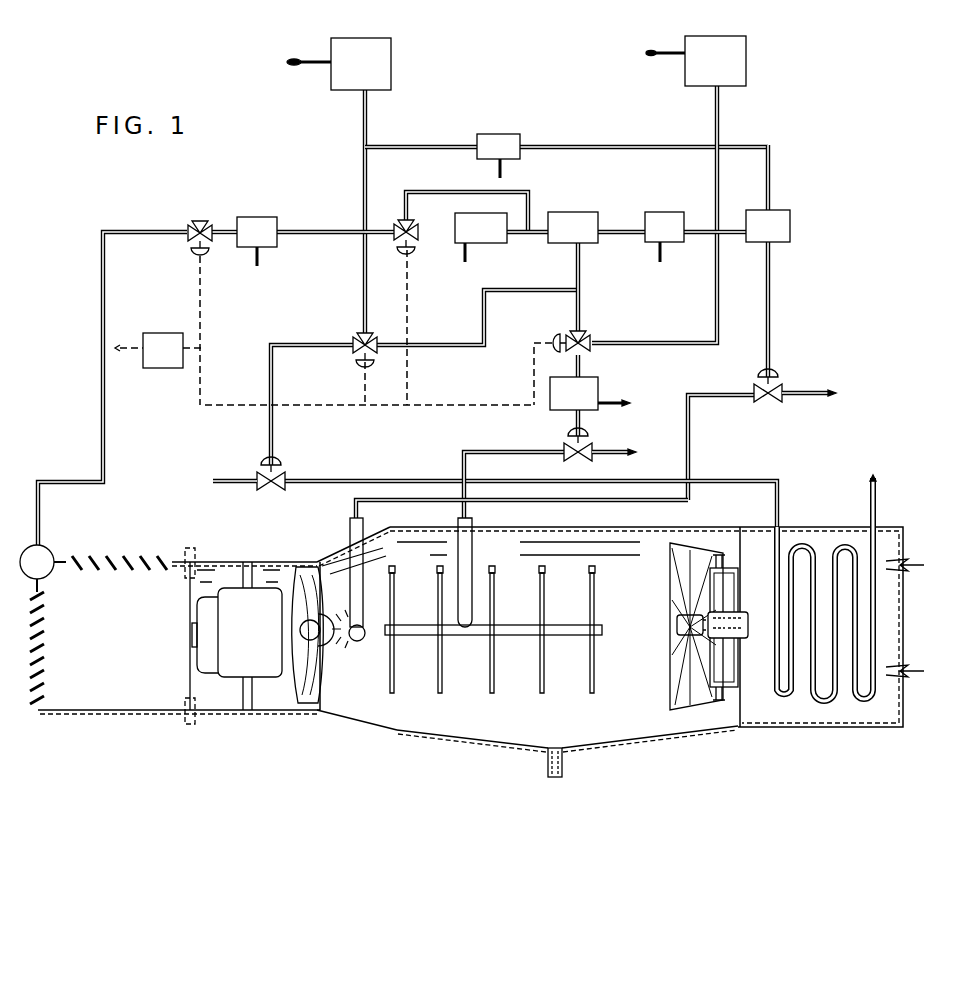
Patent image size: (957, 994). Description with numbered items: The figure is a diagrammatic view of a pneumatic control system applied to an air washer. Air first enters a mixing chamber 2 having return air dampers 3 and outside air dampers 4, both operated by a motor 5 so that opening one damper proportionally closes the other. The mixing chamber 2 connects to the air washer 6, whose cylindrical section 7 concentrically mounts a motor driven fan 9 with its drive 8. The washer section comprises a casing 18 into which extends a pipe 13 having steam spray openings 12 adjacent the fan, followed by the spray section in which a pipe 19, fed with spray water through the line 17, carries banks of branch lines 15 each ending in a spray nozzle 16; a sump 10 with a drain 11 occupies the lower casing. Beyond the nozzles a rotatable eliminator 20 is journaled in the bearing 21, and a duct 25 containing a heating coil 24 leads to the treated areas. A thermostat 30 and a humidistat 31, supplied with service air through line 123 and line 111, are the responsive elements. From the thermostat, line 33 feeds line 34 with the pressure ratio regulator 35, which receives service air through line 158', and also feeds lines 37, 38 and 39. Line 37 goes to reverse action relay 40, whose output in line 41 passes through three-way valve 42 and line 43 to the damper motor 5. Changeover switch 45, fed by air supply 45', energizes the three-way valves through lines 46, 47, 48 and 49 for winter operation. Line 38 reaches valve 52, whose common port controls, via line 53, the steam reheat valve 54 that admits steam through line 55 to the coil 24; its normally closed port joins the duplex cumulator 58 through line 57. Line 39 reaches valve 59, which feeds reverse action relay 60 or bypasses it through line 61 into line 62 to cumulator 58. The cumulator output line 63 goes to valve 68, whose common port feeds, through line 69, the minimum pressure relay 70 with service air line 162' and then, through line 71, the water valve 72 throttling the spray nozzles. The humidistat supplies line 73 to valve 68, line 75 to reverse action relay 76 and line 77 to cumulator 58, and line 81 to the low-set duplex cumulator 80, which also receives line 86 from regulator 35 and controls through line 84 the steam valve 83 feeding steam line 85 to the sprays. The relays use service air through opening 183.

The mixing chamber 2 is at (122, 651).
The return air dampers 3 is at (125, 556).
The outside air dampers 4 is at (32, 650).
The motor 5 is at (47, 552).
The air washer 6 is at (356, 726).
The cylindrical section 7 is at (236, 714).
The fan motor 8 is at (255, 641).
The motor driven fan 9 is at (319, 581).
The sump 10 is at (514, 750).
The drain 11 is at (563, 770).
The spray openings 12 is at (359, 642).
The pipe 13 is at (349, 538).
The branch lines 15 is at (395, 606).
The spray nozzle 16 is at (396, 573).
The line 17 is at (473, 557).
The casing 18 is at (398, 740).
The pipe 19 is at (418, 626).
The rotatable eliminator 20 is at (728, 607).
The bearing 21 is at (675, 566).
The heating coil 24 is at (786, 700).
The duct 25 is at (821, 526).
The thermostat 30 is at (392, 62).
The humidistat 31 is at (747, 56).
The line 33 is at (367, 140).
The line 34 is at (430, 146).
The pressure ratio regulator 35 is at (493, 133).
The line 37 is at (330, 236).
The line 38 is at (367, 298).
The line 39 is at (376, 229).
The reverse action relay 40 is at (270, 216).
The line 41 is at (223, 229).
The valve 42 is at (192, 226).
The line 43 is at (102, 337).
The changeover switch 45 is at (174, 372).
The supply of air 45' is at (127, 369).
The line 46 is at (205, 315).
The line 47 is at (305, 405).
The line 48 is at (413, 316).
The line 49 is at (500, 405).
The valve 52 is at (357, 336).
The line 53 is at (306, 345).
The steam reheat valve 54 is at (266, 464).
The line 55 is at (372, 479).
The line 57 is at (480, 342).
The duplex cumulator 58 is at (580, 211).
The valve 59 is at (415, 250).
The reverse action relay 60 is at (488, 244).
The line 61 is at (452, 191).
The line 62 is at (529, 238).
The line 63 is at (582, 286).
The valve 68 is at (590, 340).
The line 69 is at (590, 369).
The minimum pressure relay 70 is at (600, 392).
The line 71 is at (570, 424).
The valve 72 is at (589, 443).
The line 73 is at (720, 207).
The line 75 is at (694, 229).
The reverse action relay 76 is at (663, 211).
The line 77 is at (626, 229).
The duplex cumulator 80 is at (784, 209).
The line 81 is at (724, 243).
The valve 83 is at (776, 379).
The line 84 is at (772, 316).
The line 85 is at (703, 394).
The line 86 is at (748, 141).
The line 111 is at (656, 51).
The line 123 is at (308, 60).
The line 158' is at (528, 172).
The line 162' is at (639, 411).
The opening 183 is at (259, 267).